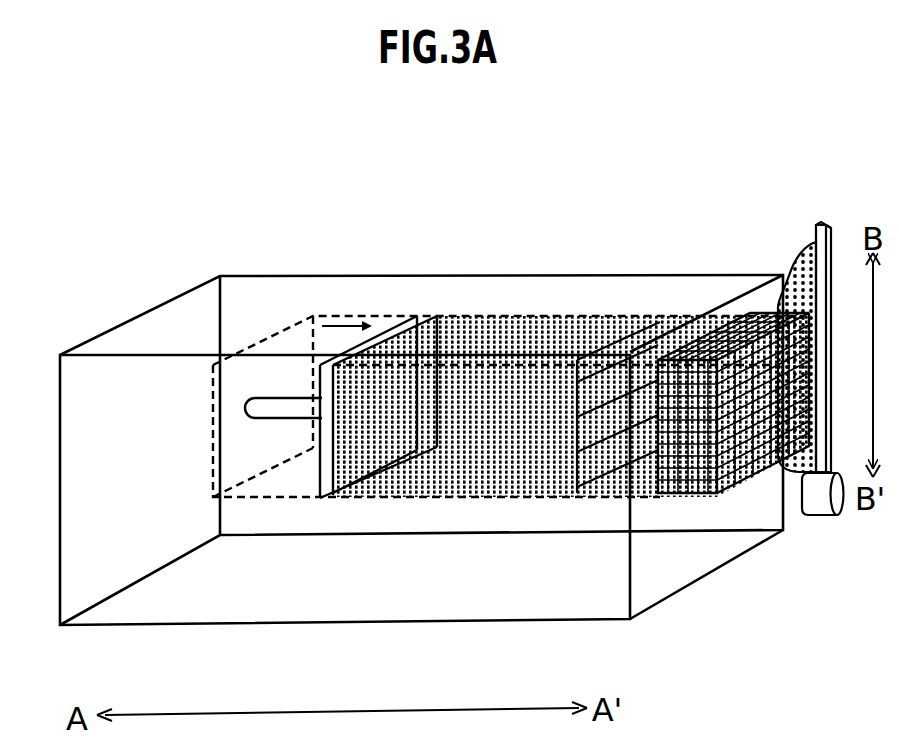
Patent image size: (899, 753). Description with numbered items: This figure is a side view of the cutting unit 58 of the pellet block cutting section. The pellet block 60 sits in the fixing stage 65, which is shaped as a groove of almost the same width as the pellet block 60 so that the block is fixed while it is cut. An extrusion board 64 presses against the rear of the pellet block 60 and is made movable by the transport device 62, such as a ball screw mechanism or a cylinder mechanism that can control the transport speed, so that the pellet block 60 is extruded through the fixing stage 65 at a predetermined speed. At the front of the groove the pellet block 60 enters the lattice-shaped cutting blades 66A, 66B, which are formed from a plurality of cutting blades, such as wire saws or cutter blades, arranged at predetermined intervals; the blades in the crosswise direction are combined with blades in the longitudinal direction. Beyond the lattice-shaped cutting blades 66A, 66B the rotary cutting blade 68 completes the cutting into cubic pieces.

The cutting unit 58 is at (811, 160).
The pellet block 60 is at (517, 333).
The transport device 62 is at (305, 247).
The extrusion board 64 is at (413, 320).
The fixing stage 65 is at (300, 499).
The lattice-shaped cutting blade 66A is at (593, 477).
The lattice-shaped cutting blade 66B is at (680, 497).
The rotary cutting blade 68 is at (807, 259).